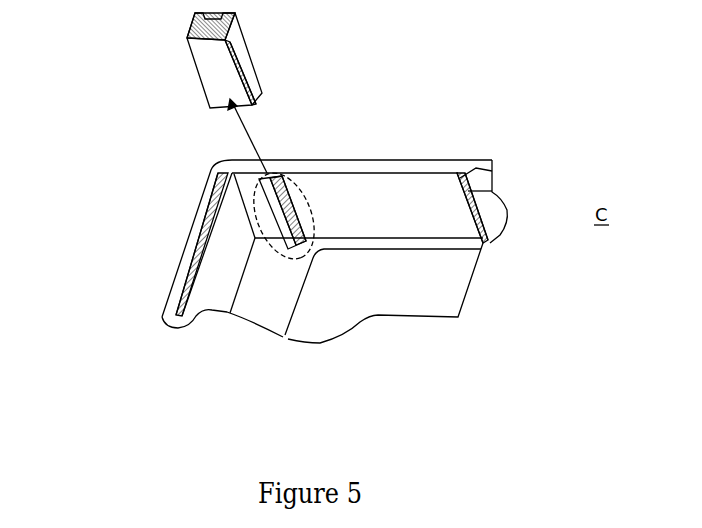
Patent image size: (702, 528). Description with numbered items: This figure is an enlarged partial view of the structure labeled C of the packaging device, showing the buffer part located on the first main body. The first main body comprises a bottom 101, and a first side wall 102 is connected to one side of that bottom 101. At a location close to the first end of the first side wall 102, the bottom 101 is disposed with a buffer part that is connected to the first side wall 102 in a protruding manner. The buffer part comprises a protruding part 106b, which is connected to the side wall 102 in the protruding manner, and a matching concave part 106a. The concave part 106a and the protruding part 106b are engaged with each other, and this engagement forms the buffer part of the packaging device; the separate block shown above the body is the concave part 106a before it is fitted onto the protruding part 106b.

The bottom 101 is at (418, 293).
The first side wall 102 is at (393, 168).
The concave part 106a is at (201, 73).
The protruding part 106b is at (272, 175).